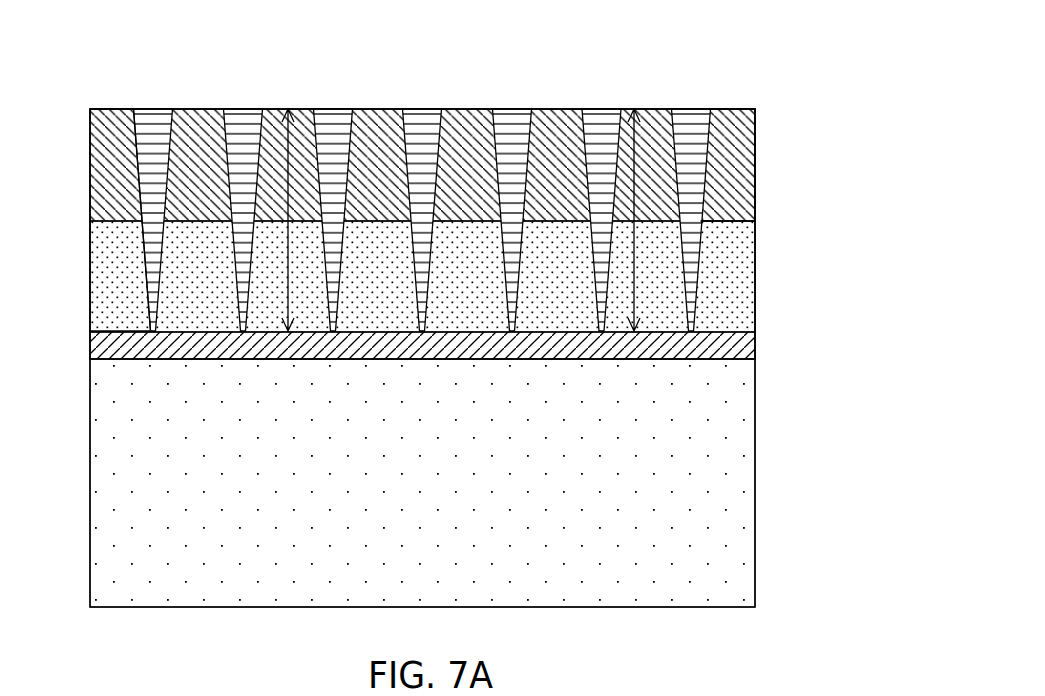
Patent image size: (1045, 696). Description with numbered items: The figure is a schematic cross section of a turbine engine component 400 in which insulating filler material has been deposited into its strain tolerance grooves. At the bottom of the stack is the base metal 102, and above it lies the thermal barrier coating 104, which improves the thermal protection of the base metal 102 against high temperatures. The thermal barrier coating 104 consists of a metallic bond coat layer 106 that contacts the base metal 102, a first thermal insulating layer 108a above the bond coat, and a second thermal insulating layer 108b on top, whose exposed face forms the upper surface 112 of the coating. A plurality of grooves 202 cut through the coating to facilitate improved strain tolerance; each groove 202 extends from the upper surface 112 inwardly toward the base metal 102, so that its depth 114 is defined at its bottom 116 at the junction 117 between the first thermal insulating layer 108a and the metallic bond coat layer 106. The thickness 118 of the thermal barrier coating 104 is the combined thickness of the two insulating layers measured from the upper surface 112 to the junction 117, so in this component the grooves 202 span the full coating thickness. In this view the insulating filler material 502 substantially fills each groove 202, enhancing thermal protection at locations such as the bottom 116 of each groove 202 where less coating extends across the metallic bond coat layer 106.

The turbine engine component 400 is at (750, 44).
The base metal 102 is at (755, 470).
The thermal barrier coating 104 is at (78, 108).
The metallic bond coat layer 106 is at (755, 351).
The first thermal insulating layer 108a is at (755, 273).
The second thermal insulating layer 108b is at (755, 173).
The upper surface 112 is at (120, 109).
The depth 114 is at (632, 133).
The bottom 116 is at (598, 330).
The junction 117 is at (157, 333).
The thickness 118 is at (285, 237).
The groove 202 is at (716, 136).
The insulating filler material 502 is at (697, 109).